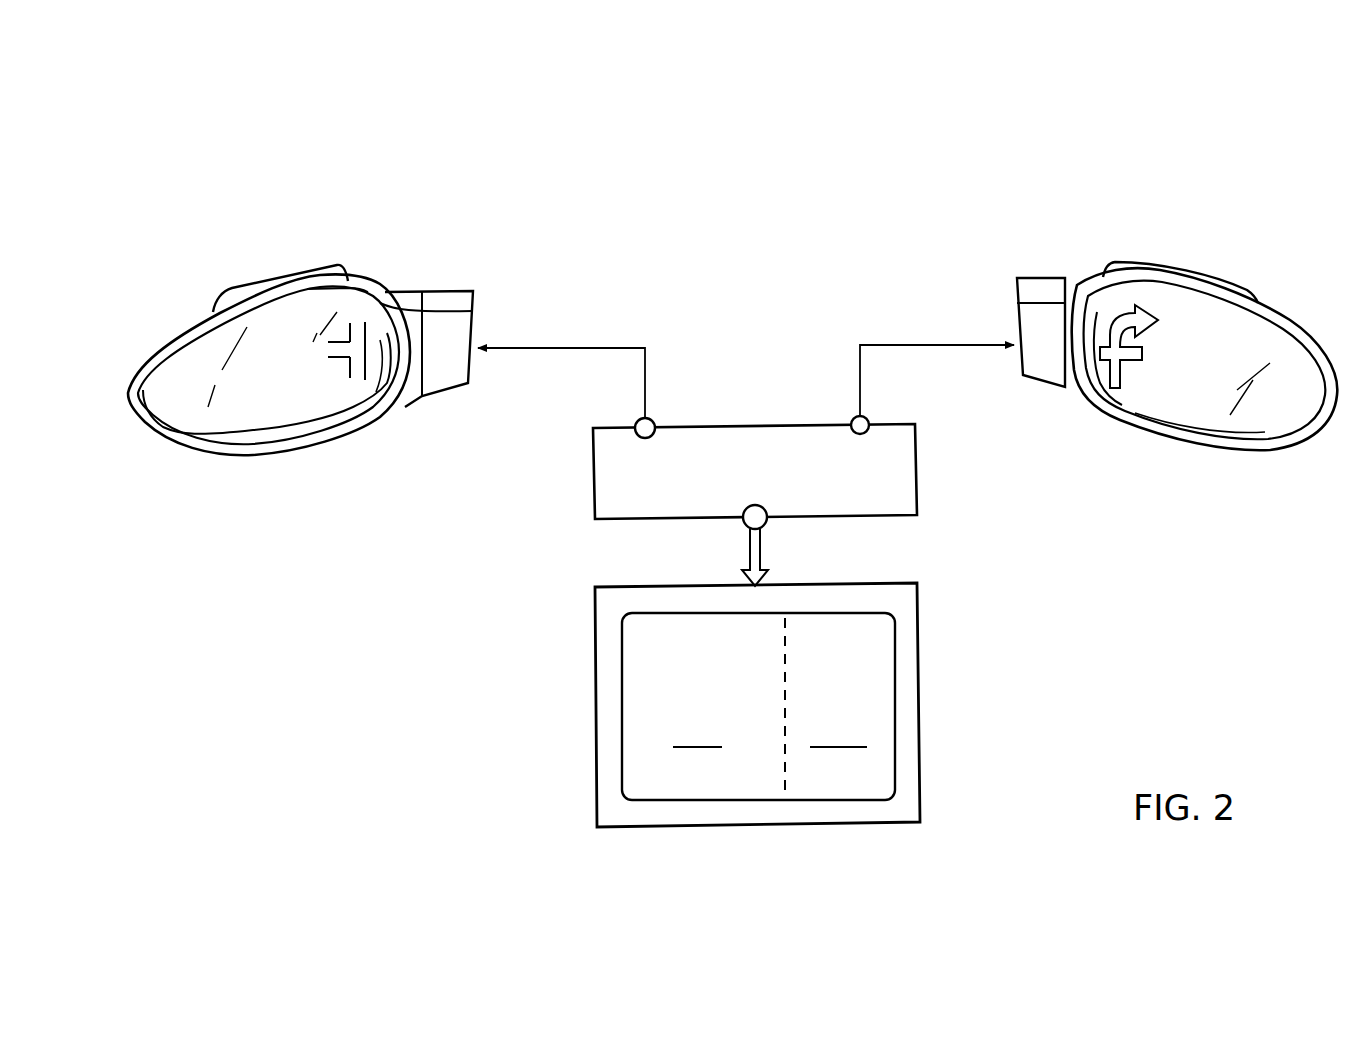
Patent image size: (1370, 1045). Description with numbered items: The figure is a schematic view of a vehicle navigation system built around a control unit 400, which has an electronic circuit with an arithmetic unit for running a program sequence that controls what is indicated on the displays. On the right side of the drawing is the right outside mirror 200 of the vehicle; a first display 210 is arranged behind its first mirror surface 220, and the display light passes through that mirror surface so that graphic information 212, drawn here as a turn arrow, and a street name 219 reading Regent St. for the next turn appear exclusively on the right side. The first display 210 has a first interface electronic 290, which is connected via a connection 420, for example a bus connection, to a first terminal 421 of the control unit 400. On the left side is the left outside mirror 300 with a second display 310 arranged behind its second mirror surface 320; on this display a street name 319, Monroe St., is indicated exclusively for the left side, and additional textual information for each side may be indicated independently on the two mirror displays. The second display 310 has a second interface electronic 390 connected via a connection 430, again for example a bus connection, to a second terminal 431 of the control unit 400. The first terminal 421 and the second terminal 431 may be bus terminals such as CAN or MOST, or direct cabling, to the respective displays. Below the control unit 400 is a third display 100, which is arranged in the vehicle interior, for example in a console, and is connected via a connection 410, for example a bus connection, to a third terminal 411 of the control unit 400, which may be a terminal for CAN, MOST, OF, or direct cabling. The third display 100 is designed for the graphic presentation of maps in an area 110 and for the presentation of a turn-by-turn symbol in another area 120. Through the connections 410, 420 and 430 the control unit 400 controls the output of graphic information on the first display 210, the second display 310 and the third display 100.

The third display 100 is at (922, 700).
The area 110 is at (699, 731).
The another area 120 is at (838, 731).
The right outside mirror 200 is at (1215, 297).
The first display 210 is at (1160, 265).
The graphic information 212 is at (1128, 305).
The street name 219 is at (1187, 360).
The first mirror surface 220 is at (1202, 395).
The first interface electronic 290 is at (1036, 300).
The left outside mirror 300 is at (257, 303).
The second display 310 is at (320, 270).
The street name 319 is at (305, 390).
The second mirror surface 320 is at (273, 407).
The second interface electronic 390 is at (443, 310).
The control unit 400 is at (918, 467).
The connection 410 is at (764, 546).
The third terminal 411 is at (742, 525).
The connection 420 is at (938, 345).
The first terminal 421 is at (869, 418).
The connection 430 is at (557, 348).
The second terminal 431 is at (636, 419).